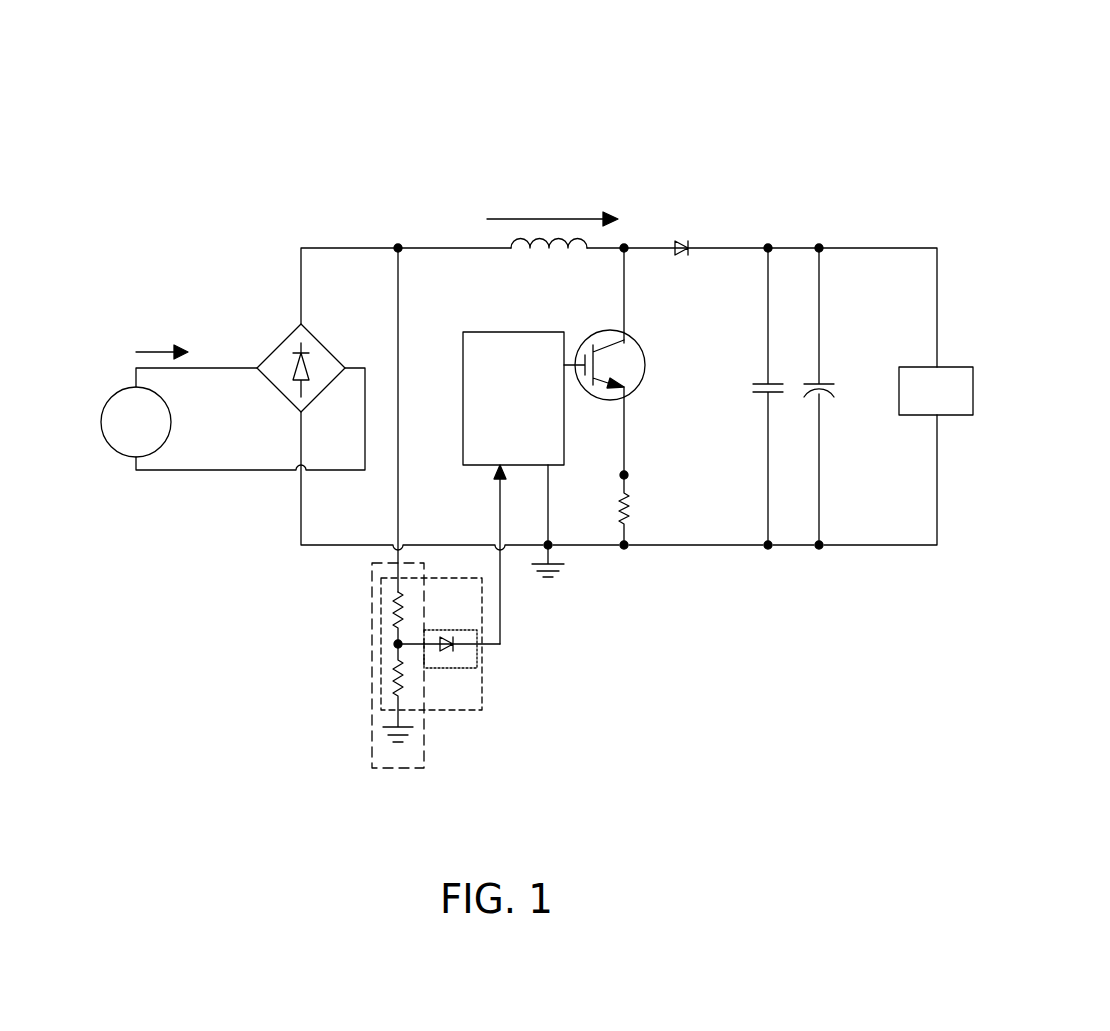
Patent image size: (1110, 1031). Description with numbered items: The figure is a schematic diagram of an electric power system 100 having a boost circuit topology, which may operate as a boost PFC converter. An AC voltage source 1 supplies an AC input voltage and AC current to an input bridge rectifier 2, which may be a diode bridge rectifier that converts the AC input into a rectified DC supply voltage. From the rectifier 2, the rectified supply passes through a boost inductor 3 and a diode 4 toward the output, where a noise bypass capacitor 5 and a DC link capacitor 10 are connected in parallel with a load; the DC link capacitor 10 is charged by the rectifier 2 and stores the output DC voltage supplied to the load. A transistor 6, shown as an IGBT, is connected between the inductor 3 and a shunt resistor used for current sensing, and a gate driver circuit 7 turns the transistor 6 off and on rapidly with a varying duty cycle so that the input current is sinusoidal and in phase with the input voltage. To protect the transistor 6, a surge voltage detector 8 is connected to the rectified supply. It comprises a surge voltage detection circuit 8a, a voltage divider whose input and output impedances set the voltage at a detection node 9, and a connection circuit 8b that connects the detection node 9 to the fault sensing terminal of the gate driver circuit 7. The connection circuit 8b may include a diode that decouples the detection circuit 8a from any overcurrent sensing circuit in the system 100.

The electric power system 100 is at (806, 58).
The AC voltage source 1 is at (117, 391).
The input bridge rectifier 2 is at (280, 345).
The boost inductor 3 is at (511, 247).
The diode 4 is at (680, 240).
The noise bypass capacitor 5 is at (762, 378).
The transistor 6 is at (640, 338).
The gate driver circuit 7 is at (510, 332).
The surge voltage detector 8 is at (381, 696).
The surge voltage detection circuit 8a is at (372, 746).
The connection circuit 8b is at (480, 664).
The detection node 9 is at (394, 644).
The DC link capacitor 10 is at (813, 378).